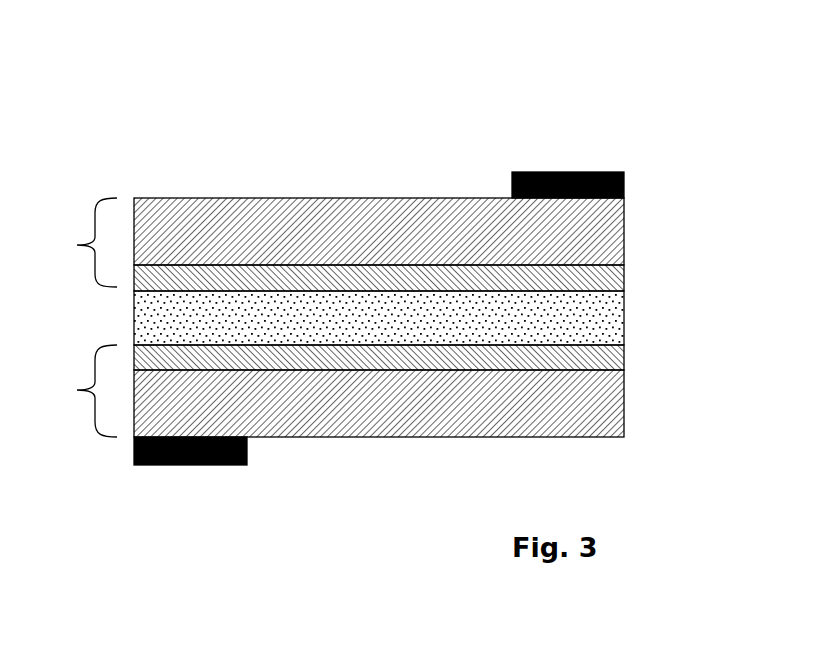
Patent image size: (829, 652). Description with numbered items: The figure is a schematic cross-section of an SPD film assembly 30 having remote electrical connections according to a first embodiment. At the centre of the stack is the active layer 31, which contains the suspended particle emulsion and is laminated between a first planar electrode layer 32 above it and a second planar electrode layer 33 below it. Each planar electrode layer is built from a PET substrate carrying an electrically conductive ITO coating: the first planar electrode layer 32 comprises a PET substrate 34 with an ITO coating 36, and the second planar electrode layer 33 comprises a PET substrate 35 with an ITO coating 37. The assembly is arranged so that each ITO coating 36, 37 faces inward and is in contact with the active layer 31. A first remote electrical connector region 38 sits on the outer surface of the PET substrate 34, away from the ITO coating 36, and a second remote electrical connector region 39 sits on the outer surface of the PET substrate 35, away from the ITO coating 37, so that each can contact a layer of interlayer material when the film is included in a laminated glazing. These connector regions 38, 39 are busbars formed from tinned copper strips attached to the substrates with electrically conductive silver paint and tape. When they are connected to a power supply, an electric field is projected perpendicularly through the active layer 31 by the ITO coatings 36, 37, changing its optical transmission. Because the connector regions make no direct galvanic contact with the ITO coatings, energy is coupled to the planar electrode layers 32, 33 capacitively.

The SPD film assembly 30 is at (433, 120).
The active layer 31 is at (605, 317).
The first planar electrode layer 32 is at (414, 244).
The second planar electrode layer 33 is at (412, 391).
The PET substrate 34 is at (600, 235).
The ITO coating 36 is at (608, 272).
The ITO coating 37 is at (607, 357).
The PET substrate 35 is at (585, 410).
The first remote electrical connector region 38 is at (573, 172).
The second remote electrical connector region 39 is at (220, 465).